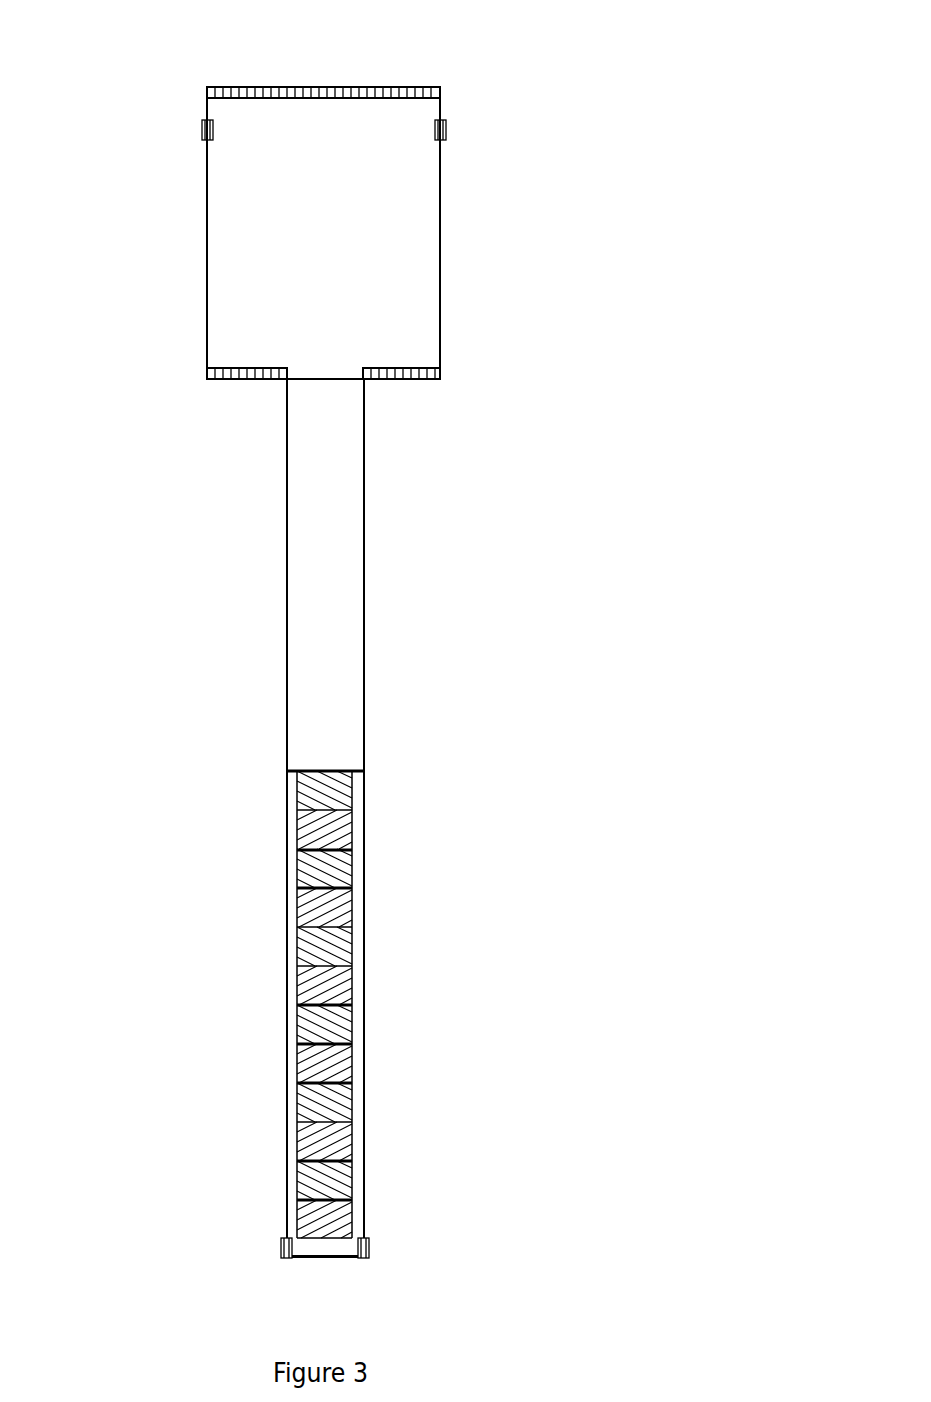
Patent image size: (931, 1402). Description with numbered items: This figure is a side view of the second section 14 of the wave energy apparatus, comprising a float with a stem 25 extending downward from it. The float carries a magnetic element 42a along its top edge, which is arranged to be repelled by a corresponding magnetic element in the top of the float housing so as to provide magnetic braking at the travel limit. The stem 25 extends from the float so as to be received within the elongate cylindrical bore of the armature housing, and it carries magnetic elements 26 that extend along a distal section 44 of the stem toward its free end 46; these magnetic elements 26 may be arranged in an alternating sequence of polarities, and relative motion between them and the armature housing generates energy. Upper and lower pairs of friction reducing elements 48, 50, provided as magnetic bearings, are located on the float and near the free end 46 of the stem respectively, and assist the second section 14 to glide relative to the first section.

The second section 14 is at (486, 241).
The magnetic element of the float 42a is at (393, 85).
The upper pair of friction reducing elements 48 is at (200, 128).
The stem 25 is at (338, 620).
The magnetic elements 26 is at (342, 875).
The distal section 44 is at (355, 1058).
The lower pair of friction reducing elements 50 is at (278, 1240).
The free end 46 is at (323, 1254).